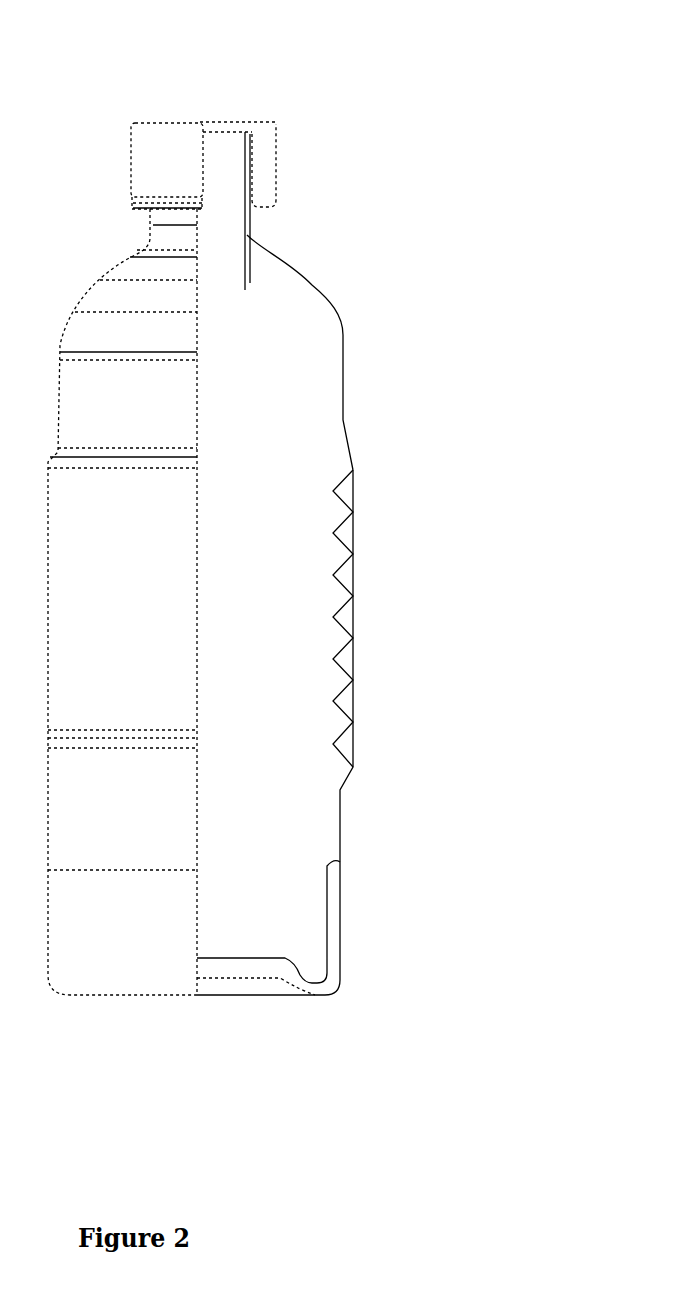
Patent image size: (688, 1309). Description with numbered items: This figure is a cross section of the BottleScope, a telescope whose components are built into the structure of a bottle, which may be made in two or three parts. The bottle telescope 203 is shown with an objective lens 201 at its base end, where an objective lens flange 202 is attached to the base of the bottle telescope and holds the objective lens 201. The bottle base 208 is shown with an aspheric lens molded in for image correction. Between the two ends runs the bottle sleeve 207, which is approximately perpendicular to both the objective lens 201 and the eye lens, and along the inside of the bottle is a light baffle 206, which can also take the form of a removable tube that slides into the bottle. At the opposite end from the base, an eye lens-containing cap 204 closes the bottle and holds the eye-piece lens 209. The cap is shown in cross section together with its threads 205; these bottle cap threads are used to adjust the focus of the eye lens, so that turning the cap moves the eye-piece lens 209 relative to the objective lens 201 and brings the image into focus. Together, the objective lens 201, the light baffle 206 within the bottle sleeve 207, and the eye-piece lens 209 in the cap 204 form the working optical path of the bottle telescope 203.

The objective lens 201 is at (237, 978).
The objective lens flange 202 is at (362, 914).
The bottle telescope 203 is at (335, 292).
The eye lens-containing cap 204 is at (278, 150).
The threads 205 is at (268, 128).
The light baffle 206 is at (250, 285).
The bottle sleeve 207 is at (358, 617).
The bottle base 208 is at (340, 1010).
The eye-piece lens 209 is at (222, 120).